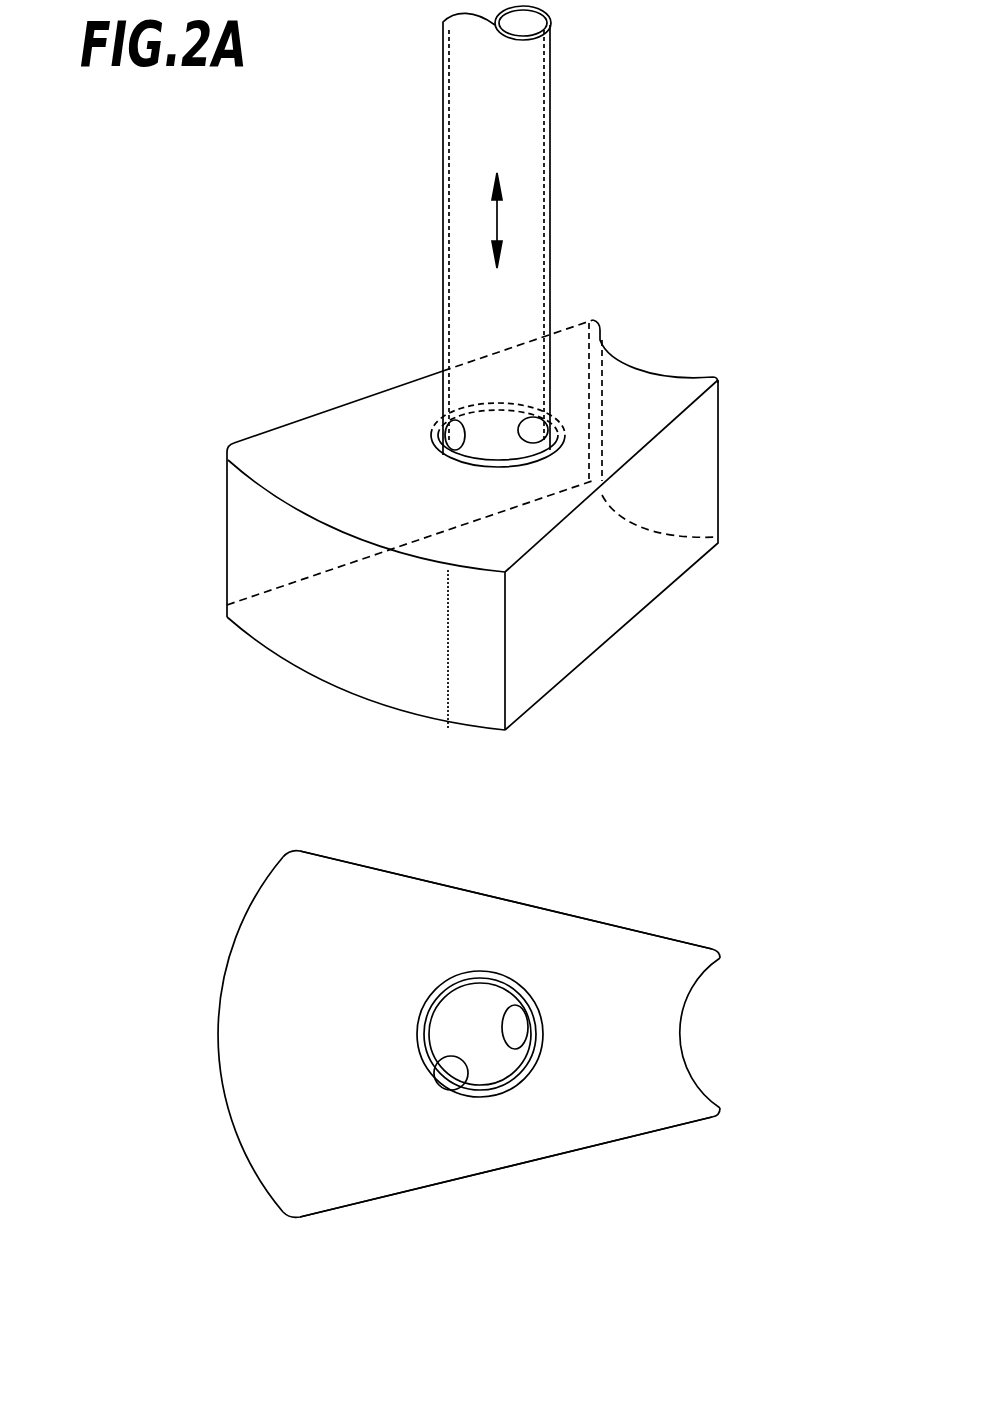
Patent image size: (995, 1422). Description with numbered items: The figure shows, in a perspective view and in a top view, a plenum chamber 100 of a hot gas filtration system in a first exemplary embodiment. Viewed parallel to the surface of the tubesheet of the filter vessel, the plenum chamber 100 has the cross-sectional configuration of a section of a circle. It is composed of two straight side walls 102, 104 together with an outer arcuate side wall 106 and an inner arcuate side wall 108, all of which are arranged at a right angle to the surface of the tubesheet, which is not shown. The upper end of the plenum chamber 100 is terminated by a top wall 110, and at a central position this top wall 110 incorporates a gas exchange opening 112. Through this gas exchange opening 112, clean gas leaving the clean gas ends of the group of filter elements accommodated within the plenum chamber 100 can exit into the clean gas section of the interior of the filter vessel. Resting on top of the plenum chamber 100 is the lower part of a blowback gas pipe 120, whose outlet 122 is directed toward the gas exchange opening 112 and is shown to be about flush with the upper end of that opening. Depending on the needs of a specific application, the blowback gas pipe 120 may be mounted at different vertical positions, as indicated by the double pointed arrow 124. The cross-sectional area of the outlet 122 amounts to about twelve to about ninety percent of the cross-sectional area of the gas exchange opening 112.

The plenum chamber 100 is at (465, 771).
The straight side wall 102 is at (577, 627).
The straight side wall 104 is at (250, 518).
The outer arcuate side wall 106 is at (306, 628).
The inner arcuate side wall 108 is at (655, 372).
The top wall 110 is at (326, 437).
The gas exchange opening 112 is at (453, 458).
The blowback gas pipe 120 is at (551, 98).
The outlet 122 is at (607, 358).
The double pointed arrow 124 is at (498, 221).